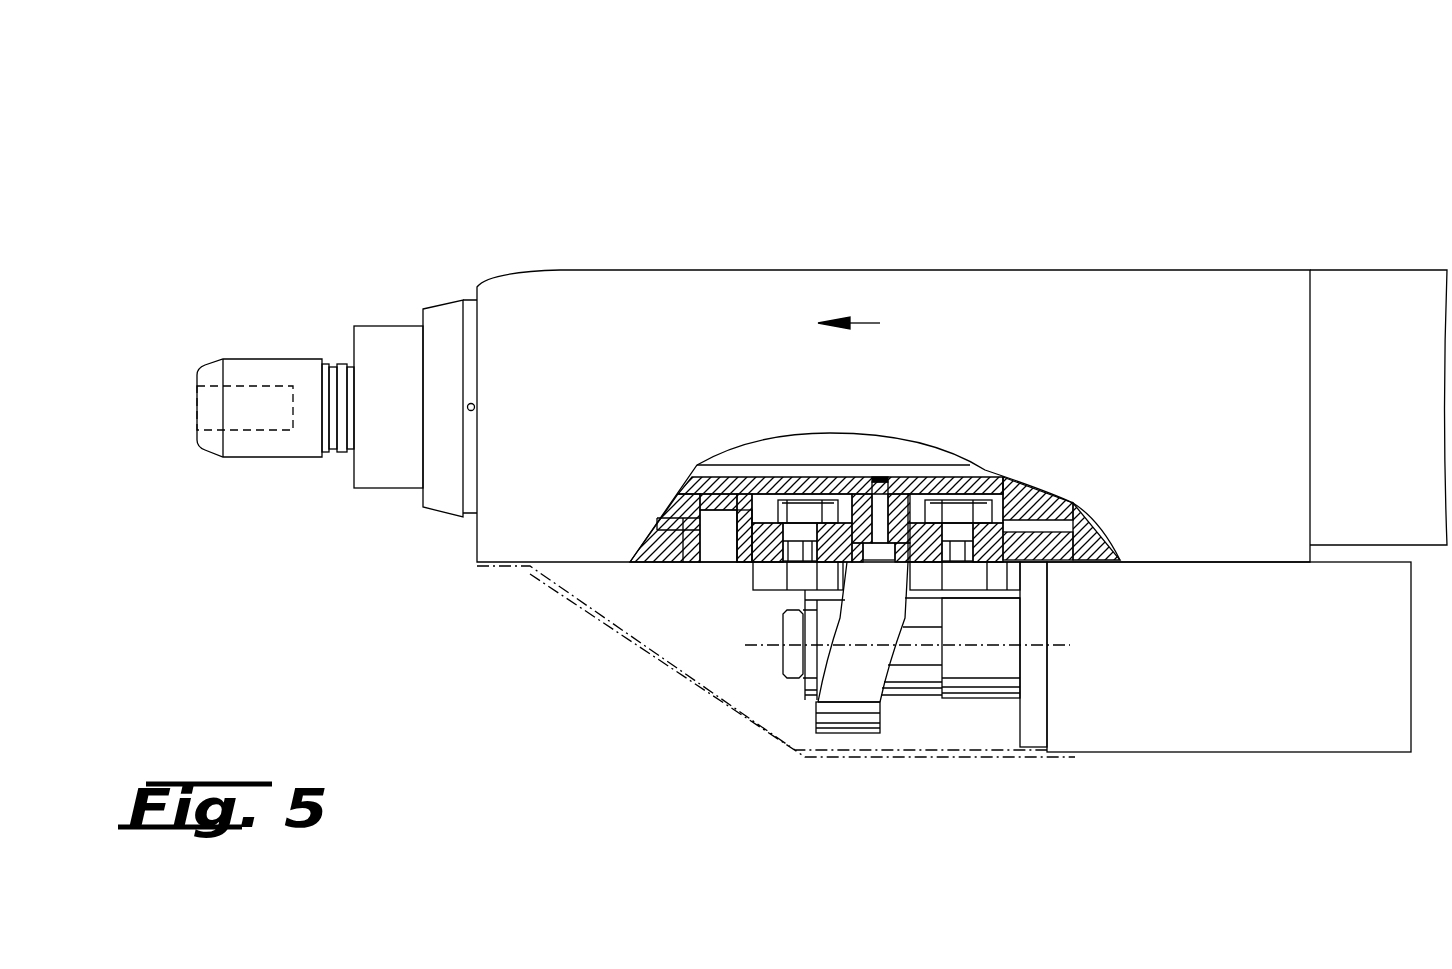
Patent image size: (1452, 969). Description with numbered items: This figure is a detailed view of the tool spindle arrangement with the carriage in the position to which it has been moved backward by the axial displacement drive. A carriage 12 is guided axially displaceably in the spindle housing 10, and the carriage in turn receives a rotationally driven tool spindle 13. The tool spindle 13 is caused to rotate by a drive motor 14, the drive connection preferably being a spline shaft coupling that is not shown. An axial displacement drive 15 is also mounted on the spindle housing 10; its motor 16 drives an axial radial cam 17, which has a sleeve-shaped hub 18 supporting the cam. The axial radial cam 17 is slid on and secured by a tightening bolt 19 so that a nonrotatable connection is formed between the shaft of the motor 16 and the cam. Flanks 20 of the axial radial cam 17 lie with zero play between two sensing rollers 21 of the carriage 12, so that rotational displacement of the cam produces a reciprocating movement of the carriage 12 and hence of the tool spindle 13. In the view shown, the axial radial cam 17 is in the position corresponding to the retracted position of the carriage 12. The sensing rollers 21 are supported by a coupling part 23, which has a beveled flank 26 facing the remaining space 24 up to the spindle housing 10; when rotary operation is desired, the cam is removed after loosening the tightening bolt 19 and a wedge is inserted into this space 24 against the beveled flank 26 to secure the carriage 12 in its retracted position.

The spindle housing 10 is at (663, 545).
The carriage 12 is at (683, 530).
The tool spindle 13 is at (722, 457).
The drive motor 14 is at (1383, 327).
The axial displacement drive 15 is at (1080, 750).
The motor 16 is at (1165, 712).
The axial radial cam 17 is at (847, 715).
The sleeve-shaped hub 18 is at (918, 672).
The tightening bolt 19 is at (793, 672).
The flanks 20 is at (840, 620).
The sensing rollers 21 is at (777, 578).
The coupling part 23 is at (760, 540).
The remaining space 24 is at (715, 530).
The beveled flank 26 is at (731, 540).